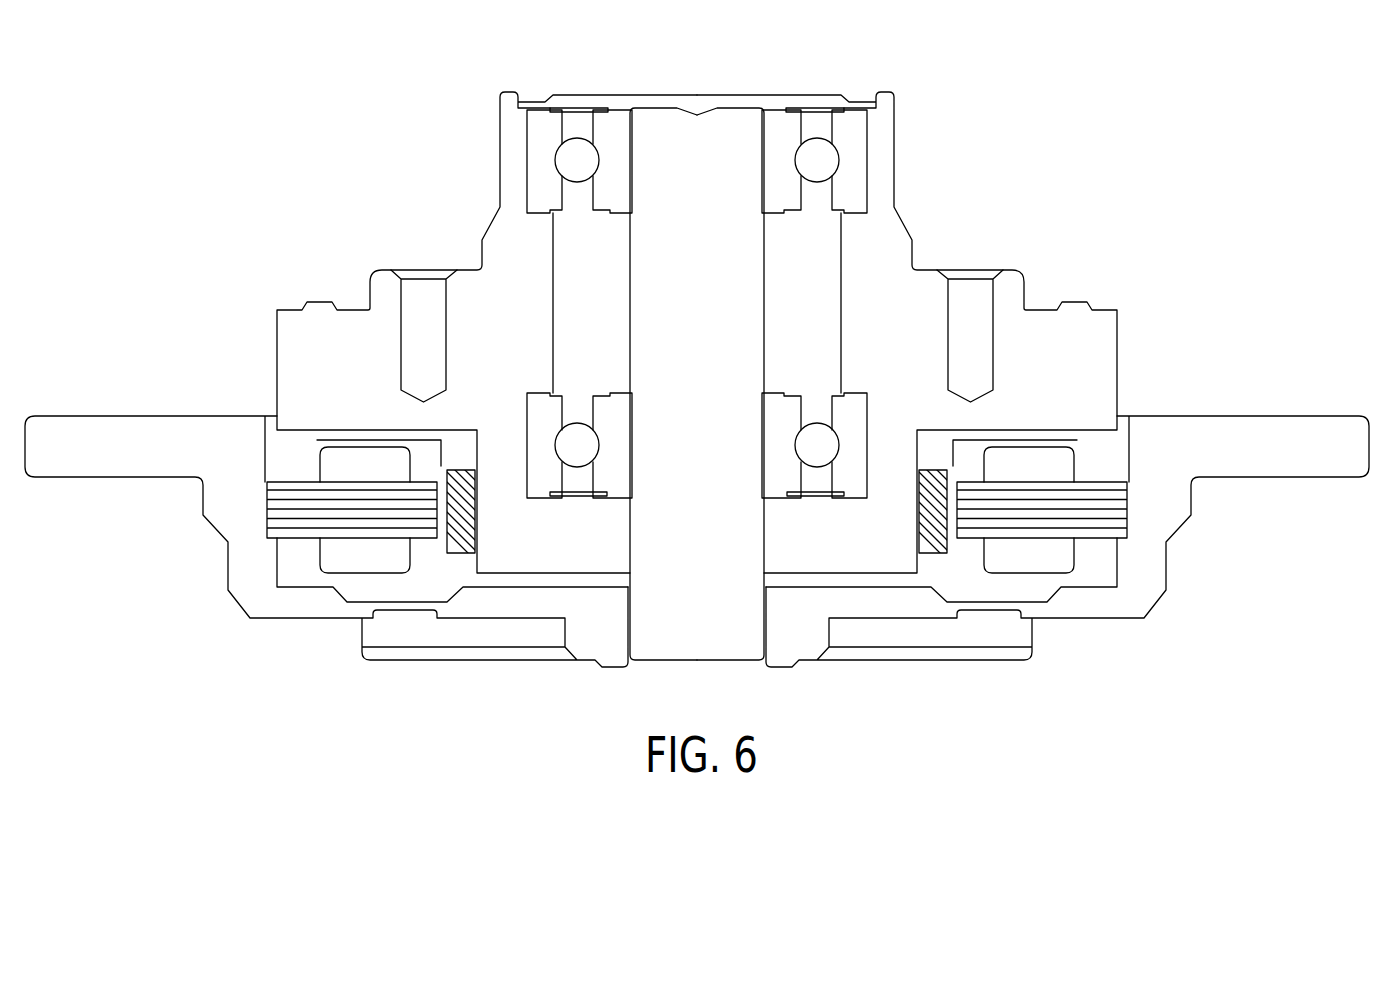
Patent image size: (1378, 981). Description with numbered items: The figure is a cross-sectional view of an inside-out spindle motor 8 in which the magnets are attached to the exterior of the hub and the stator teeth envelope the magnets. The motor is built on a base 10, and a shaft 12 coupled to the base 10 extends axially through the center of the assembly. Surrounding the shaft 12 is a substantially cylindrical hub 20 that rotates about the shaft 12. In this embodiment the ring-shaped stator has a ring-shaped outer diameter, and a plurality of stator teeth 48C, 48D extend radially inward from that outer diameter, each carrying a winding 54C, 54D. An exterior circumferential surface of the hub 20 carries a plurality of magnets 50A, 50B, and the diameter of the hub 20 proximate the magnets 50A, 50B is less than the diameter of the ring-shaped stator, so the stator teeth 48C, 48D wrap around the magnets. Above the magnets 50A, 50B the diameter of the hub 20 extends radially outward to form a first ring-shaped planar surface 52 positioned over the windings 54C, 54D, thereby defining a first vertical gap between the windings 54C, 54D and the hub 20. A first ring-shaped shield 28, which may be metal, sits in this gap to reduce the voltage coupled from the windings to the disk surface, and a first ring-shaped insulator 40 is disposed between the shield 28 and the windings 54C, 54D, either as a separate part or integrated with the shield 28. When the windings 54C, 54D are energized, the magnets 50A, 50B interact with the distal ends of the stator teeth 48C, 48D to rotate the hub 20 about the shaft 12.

The spindle motor 8 is at (1100, 125).
The base 10 is at (242, 598).
The shaft 12 is at (707, 256).
The hub 20 is at (503, 330).
The first ring-shaped shield 28 is at (340, 440).
The first ring-shaped insulator 40 is at (372, 442).
The stator tooth 48C is at (292, 528).
The stator tooth 48D is at (1108, 525).
The magnet 50A is at (467, 527).
The magnet 50B is at (930, 523).
The first ring-shaped planar surface 52 is at (452, 424).
The winding 54C is at (328, 460).
The winding 54D is at (1067, 458).